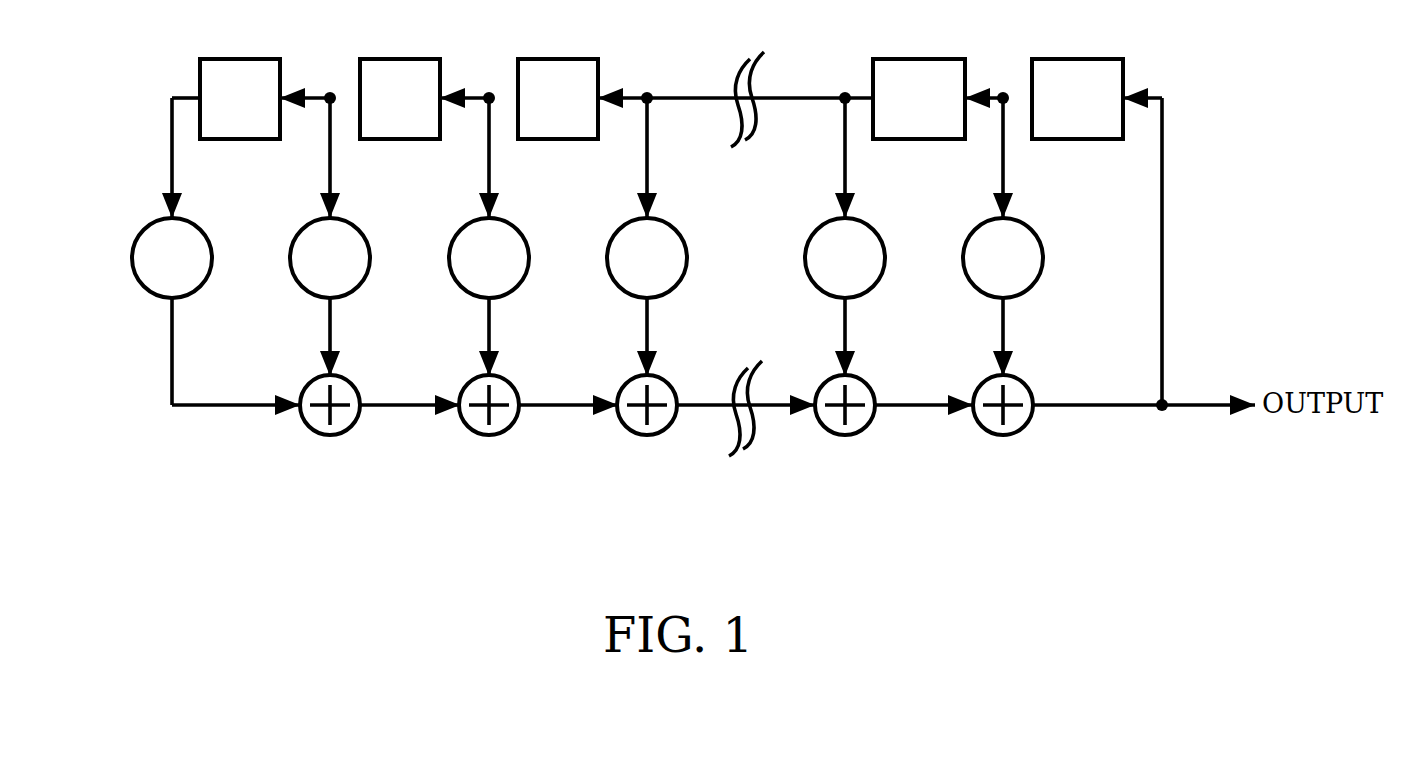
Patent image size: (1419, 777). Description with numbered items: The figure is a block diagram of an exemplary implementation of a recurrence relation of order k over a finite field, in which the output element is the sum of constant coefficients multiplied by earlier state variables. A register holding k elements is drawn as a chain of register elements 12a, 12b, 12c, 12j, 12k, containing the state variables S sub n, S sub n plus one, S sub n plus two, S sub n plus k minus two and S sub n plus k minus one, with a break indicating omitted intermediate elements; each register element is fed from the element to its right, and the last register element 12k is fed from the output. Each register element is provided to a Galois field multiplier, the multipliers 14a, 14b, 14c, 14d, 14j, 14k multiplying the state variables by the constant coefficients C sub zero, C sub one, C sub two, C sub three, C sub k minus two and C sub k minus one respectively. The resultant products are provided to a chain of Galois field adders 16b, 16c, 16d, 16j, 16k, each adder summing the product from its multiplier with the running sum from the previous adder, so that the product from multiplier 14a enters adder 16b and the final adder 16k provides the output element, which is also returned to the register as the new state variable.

The register element 12a is at (208, 59).
The register element 12b is at (368, 59).
The register element 12c is at (526, 59).
The register element 12j is at (881, 59).
The register element 12k is at (1040, 59).
The Galois field multiplier 14a is at (198, 226).
The Galois field multiplier 14b is at (356, 226).
The Galois field multiplier 14c is at (515, 226).
The Galois field multiplier 14d is at (673, 226).
The Galois field multiplier 14j is at (871, 226).
The Galois field multiplier 14k is at (1029, 226).
The Galois field adder 16b is at (352, 382).
The Galois field adder 16c is at (511, 382).
The Galois field adder 16d is at (669, 382).
The Galois field adder 16j is at (867, 382).
The Galois field adder 16k is at (1025, 382).